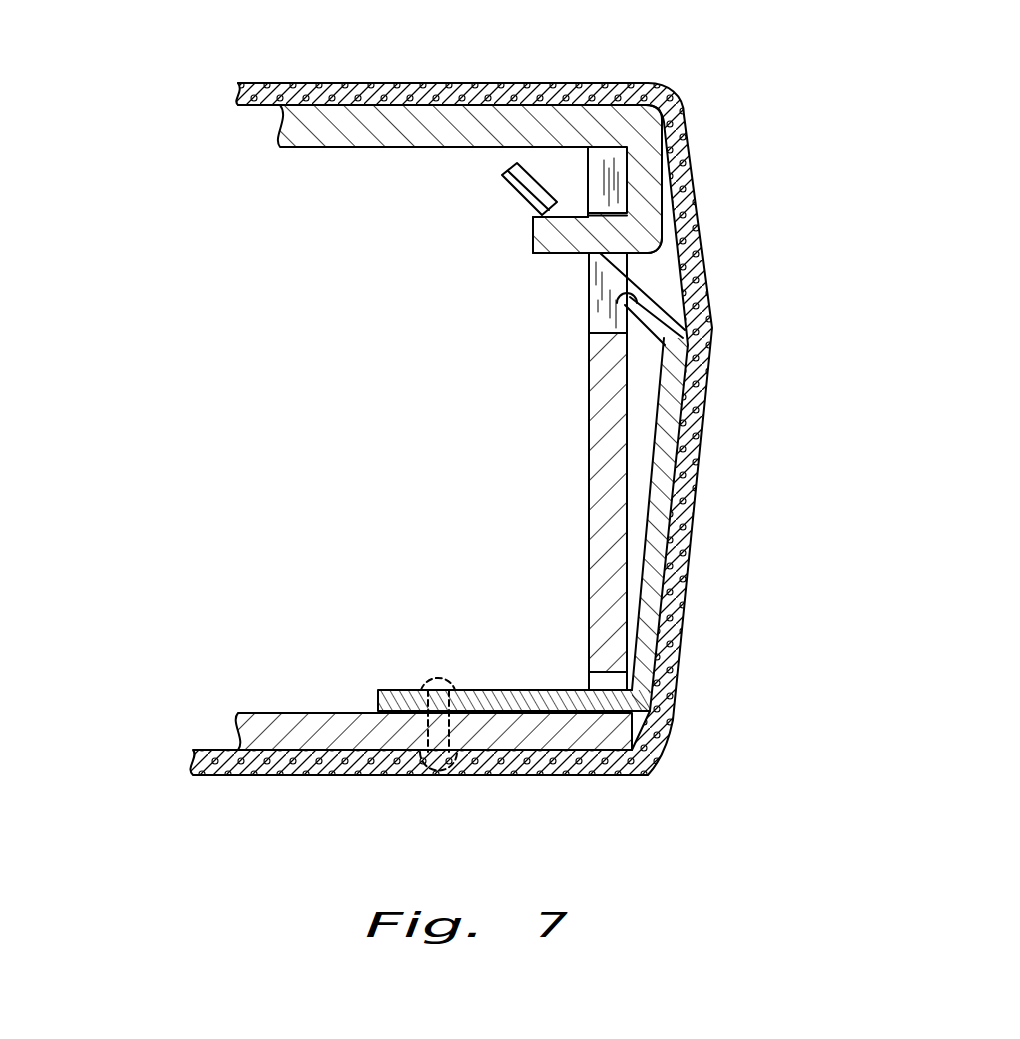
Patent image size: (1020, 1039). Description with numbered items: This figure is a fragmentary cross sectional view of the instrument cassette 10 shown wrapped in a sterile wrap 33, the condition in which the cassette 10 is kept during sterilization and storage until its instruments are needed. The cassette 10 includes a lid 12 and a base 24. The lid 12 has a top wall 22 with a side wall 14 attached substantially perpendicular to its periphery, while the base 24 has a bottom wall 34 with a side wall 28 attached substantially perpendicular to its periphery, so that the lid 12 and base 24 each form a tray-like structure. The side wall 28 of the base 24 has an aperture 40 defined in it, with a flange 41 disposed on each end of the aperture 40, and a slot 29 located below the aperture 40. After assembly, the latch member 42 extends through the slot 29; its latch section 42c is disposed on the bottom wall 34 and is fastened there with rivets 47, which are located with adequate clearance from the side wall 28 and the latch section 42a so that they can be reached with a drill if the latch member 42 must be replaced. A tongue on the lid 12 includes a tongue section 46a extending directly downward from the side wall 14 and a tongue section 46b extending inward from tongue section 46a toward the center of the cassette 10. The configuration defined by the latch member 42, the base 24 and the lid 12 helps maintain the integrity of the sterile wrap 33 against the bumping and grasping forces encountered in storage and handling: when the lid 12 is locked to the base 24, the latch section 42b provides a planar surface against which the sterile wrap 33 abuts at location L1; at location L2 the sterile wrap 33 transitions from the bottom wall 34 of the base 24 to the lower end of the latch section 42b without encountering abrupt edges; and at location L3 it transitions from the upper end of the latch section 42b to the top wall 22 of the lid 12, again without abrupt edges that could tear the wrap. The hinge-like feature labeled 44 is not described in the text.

The instrument cassette 10 is at (168, 490).
The lid 12 is at (391, 165).
The side wall 14 is at (696, 166).
The top wall 22 is at (328, 128).
The base 24 is at (484, 439).
The side wall 28 is at (605, 485).
The slot 29 is at (604, 680).
The sterile wrap 33 is at (504, 84).
The bottom wall 34 is at (288, 730).
The aperture 40 is at (598, 333).
The flange 41 is at (598, 183).
The latch member 42 is at (660, 288).
The latch section 42a is at (503, 163).
The latch section 42b is at (662, 410).
The latch section 42c is at (400, 690).
The hinge 44 is at (618, 305).
The tongue section 46a is at (650, 212).
The tongue section 46b is at (545, 238).
The rivets 47 is at (446, 768).
The location L1 is at (730, 571).
The location L2 is at (695, 773).
The location L3 is at (744, 144).